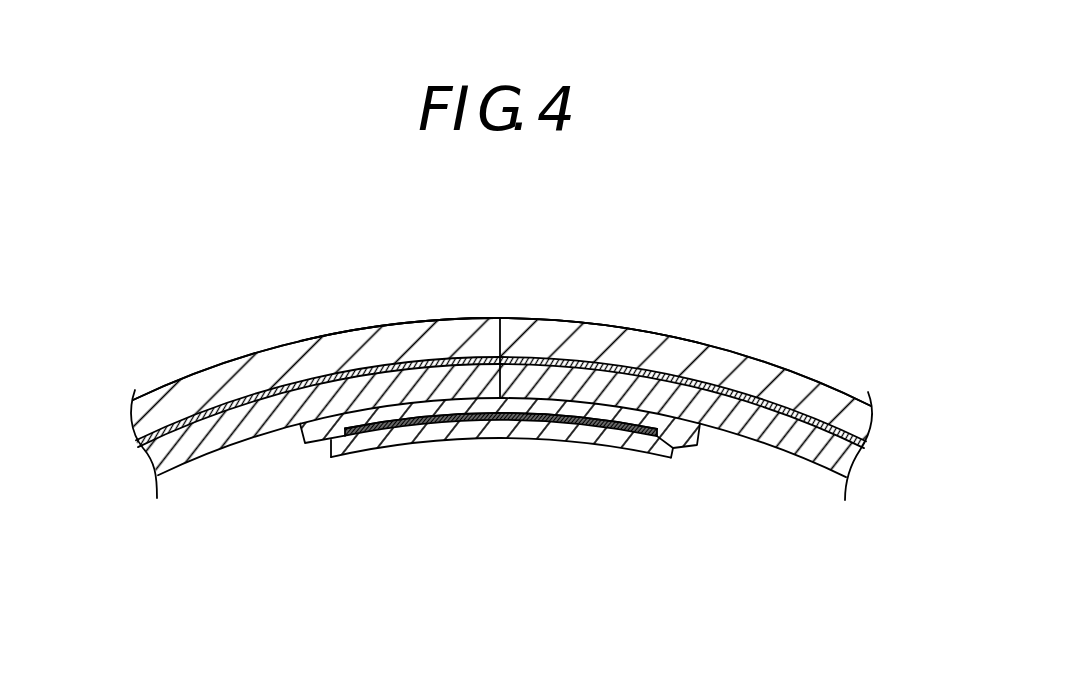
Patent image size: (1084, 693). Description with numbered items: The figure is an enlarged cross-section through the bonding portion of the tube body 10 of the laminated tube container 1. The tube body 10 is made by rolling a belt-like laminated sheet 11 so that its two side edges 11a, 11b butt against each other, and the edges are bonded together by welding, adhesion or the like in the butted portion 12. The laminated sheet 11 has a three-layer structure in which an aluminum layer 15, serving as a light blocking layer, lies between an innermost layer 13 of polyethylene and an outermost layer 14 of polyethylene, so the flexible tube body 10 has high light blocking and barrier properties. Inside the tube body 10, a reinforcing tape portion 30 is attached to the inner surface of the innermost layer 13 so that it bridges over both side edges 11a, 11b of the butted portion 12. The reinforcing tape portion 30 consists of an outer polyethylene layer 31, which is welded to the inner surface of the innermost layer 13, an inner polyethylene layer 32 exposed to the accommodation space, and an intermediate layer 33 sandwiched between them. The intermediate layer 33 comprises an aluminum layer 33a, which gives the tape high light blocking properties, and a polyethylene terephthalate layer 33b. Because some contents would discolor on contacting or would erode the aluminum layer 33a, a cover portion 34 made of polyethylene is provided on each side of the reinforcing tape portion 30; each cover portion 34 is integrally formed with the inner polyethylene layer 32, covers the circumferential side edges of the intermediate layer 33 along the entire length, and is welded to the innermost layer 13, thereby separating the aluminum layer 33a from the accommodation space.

The laminated tube container 1 is at (753, 240).
The tube body 10 is at (827, 380).
The laminated sheet 11 is at (755, 357).
The side edge 11a is at (502, 347).
The side edge 11b is at (502, 327).
The butted portion 12 is at (500, 318).
The innermost layer 13 is at (213, 440).
The outermost layer 14 is at (284, 356).
The aluminum layer 15 is at (220, 407).
The reinforcing tape portion 30 is at (397, 446).
The outer polyethylene layer 31 is at (622, 408).
The inner polyethylene layer 32 is at (524, 431).
The intermediate layer 33 is at (462, 424).
The aluminum layer 33a is at (582, 415).
The polyethylene terephthalate layer 33b is at (575, 425).
The cover portion 34 is at (306, 436).